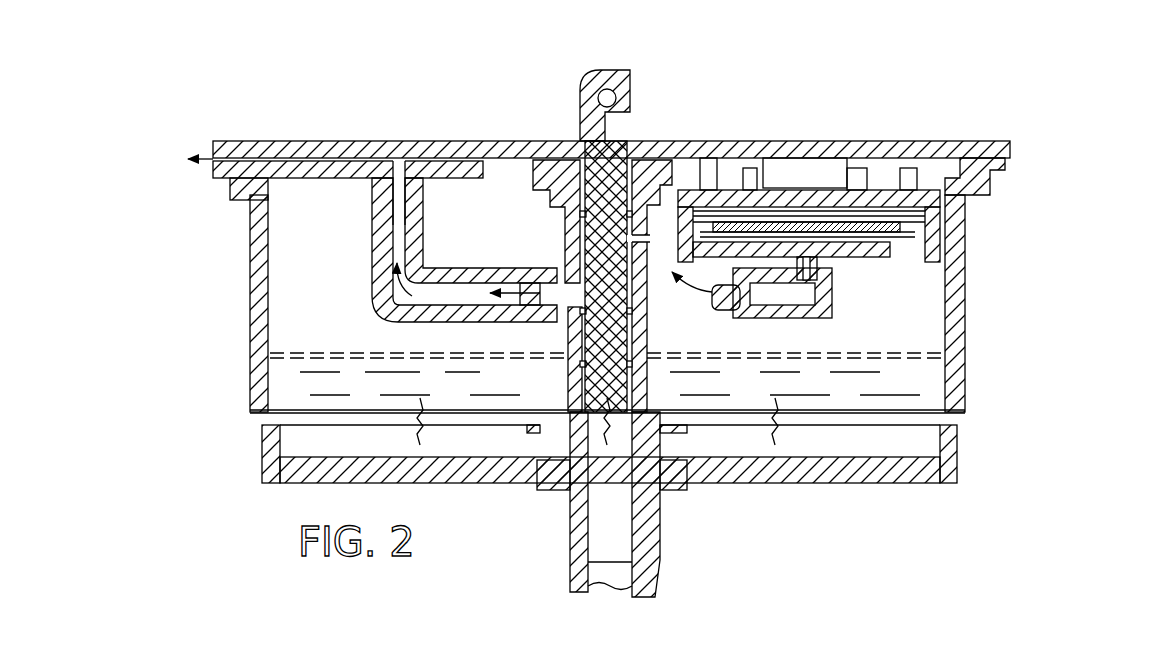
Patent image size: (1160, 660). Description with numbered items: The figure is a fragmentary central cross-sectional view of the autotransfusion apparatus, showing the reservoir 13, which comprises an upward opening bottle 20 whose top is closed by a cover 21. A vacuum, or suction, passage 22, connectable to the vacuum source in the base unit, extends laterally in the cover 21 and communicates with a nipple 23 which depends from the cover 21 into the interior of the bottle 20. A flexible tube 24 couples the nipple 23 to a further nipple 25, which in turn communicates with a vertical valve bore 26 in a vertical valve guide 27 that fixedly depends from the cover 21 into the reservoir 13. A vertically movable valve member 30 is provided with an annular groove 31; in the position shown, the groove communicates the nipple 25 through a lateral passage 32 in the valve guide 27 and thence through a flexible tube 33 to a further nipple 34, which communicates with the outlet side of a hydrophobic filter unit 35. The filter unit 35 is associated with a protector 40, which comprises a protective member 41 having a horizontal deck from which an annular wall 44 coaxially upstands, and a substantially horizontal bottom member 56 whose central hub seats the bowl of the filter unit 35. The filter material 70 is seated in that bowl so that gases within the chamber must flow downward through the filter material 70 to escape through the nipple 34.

The reservoir 13 is at (609, 305).
The bottle 20 is at (962, 323).
The cover 21 is at (480, 147).
The vacuum passage 22 is at (284, 153).
The nipple 23 is at (390, 216).
The flexible tube 24 is at (372, 274).
The nipple 25 is at (548, 290).
The shaft 26 is at (580, 160).
The valve guide 27 is at (570, 255).
The valve member 30 is at (589, 66).
The annular groove 31 is at (578, 240).
The lateral passage 32 is at (640, 240).
The flexible tube 33 is at (722, 305).
The nipple 34 is at (795, 308).
The hydrophobic filter unit 35 is at (920, 232).
The protector 40 is at (728, 188).
The protective member 41 is at (886, 186).
The annular wall 44 is at (772, 186).
The bottom member 56 is at (857, 263).
The filter material 70 is at (890, 262).